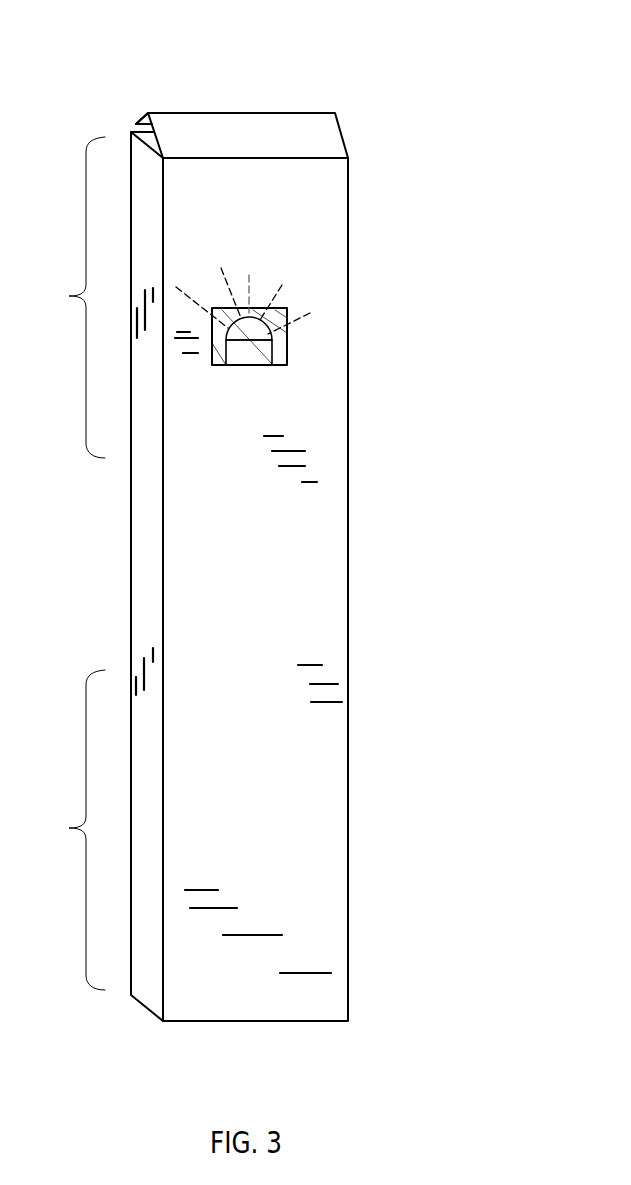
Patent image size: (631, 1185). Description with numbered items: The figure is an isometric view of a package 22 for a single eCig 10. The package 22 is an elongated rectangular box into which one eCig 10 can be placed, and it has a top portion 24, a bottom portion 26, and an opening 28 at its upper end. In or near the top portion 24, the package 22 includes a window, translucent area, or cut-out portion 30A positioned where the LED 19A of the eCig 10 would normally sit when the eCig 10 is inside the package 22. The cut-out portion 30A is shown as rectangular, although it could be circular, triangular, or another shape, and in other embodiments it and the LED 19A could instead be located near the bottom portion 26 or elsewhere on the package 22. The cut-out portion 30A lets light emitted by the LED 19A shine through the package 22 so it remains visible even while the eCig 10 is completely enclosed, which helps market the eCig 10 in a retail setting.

The package 22 is at (310, 628).
The top portion 24 is at (71, 297).
The bottom portion 26 is at (71, 830).
The opening 28 is at (114, 106).
The LED 19A is at (255, 319).
The eCig 10 is at (266, 347).
The cut-out portion 30A is at (290, 362).